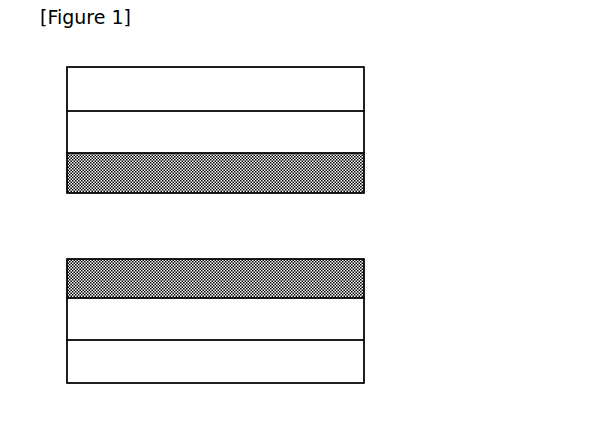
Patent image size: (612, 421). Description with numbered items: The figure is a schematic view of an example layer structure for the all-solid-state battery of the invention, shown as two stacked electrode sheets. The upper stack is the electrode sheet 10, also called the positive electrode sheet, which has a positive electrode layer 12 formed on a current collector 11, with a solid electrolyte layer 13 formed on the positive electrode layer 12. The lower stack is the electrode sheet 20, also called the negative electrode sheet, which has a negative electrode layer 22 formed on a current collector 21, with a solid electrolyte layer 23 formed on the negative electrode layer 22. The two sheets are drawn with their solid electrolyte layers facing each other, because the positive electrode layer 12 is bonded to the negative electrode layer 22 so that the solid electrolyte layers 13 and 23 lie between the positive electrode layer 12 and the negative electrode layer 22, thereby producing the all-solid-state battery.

The electrode sheet 10 is at (468, 66).
The current collector 11 is at (364, 90).
The positive electrode layer 12 is at (364, 133).
The solid electrolyte layer 13 is at (364, 173).
The electrode sheet 20 is at (462, 303).
The current collector 21 is at (364, 366).
The negative electrode layer 22 is at (364, 320).
The solid electrolyte layer 23 is at (364, 279).